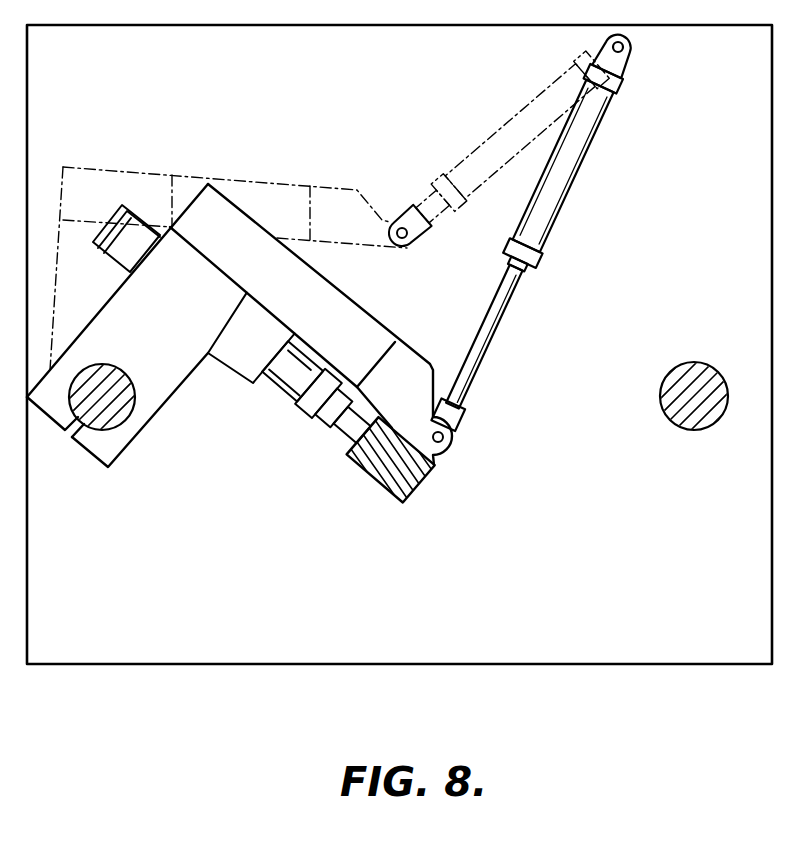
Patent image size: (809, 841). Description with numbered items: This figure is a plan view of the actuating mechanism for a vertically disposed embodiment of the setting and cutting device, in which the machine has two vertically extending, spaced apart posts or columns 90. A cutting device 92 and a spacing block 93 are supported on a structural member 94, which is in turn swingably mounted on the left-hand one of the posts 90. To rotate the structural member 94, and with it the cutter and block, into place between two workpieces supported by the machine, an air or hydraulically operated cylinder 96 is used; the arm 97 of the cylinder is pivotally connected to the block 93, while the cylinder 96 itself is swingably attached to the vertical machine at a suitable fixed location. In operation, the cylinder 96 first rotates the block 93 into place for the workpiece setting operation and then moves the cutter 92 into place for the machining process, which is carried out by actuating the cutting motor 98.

The posts or columns 90 is at (128, 417).
The cutting device 92 is at (378, 483).
The spacing block 93 is at (411, 362).
The structural member 94 is at (108, 322).
The cylinder 96 is at (578, 173).
The arm 97 is at (492, 345).
The cutting motor 98 is at (110, 218).